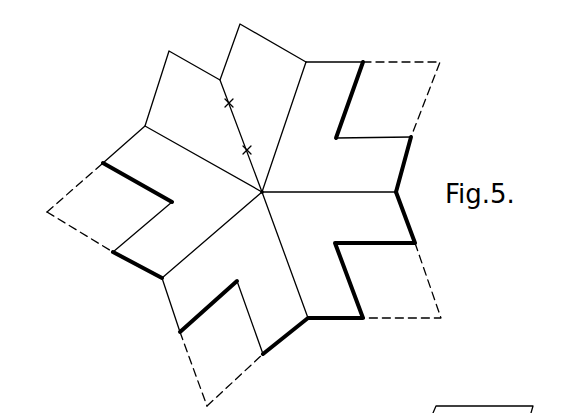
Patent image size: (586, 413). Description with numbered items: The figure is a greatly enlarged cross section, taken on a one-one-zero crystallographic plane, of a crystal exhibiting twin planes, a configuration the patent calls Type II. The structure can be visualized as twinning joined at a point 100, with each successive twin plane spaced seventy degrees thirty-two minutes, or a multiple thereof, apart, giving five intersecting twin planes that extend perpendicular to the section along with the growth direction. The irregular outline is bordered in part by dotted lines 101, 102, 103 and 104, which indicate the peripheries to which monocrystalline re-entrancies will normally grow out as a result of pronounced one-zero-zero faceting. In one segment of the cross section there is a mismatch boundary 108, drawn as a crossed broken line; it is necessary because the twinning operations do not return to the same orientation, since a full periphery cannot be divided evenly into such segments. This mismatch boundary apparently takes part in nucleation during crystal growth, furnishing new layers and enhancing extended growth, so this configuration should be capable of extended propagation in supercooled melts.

The point 100 is at (264, 189).
The dotted line 101 is at (82, 236).
The dotted line 102 is at (66, 193).
The dotted line 103 is at (185, 356).
The dotted line 104 is at (238, 379).
The mismatch boundary 108 is at (234, 120).